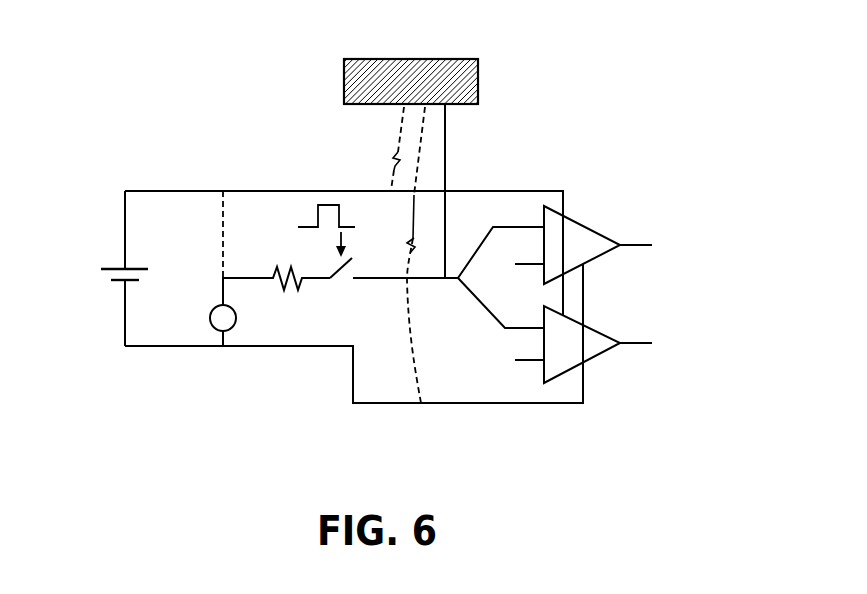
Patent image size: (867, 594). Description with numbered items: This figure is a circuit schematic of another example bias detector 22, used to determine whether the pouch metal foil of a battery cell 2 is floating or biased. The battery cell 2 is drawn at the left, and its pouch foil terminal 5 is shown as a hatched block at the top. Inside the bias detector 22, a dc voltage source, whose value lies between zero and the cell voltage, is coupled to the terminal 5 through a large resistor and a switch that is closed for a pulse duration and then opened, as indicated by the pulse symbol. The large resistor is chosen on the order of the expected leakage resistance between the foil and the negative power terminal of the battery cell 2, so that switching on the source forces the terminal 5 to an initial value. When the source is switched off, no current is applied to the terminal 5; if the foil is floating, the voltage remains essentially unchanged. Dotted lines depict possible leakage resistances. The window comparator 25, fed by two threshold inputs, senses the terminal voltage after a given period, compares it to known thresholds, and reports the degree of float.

The pouch foil terminal 5 is at (478, 78).
The battery cell 2 is at (99, 278).
The bias detector 22 is at (236, 381).
The window comparator 25 is at (592, 253).